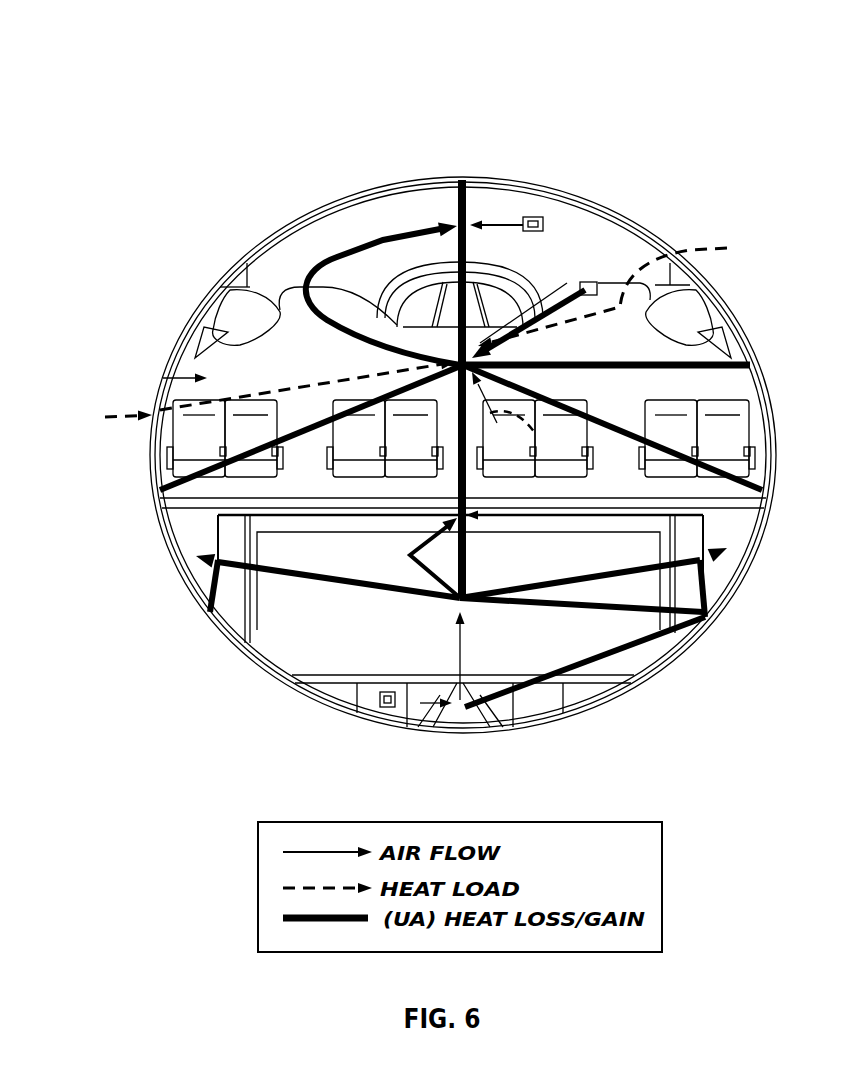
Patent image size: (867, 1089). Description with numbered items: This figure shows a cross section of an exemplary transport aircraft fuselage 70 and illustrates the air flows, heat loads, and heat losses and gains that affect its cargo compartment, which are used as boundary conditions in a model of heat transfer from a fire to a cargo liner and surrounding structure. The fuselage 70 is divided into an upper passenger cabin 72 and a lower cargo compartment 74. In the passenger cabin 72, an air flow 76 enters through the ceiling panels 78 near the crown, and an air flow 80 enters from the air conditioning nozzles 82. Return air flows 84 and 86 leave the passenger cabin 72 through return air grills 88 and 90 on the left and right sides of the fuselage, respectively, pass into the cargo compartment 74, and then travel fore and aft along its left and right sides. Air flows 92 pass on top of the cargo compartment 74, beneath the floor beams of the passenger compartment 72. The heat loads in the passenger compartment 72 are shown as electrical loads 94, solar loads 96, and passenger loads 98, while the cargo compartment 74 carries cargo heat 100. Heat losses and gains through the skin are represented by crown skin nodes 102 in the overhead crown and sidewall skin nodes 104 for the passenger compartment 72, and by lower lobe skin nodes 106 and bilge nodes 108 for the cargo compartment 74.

The fuselage 70 is at (710, 80).
The passenger cabin 72 is at (163, 372).
The cargo compartment 74 is at (318, 624).
The air flow 76 is at (308, 270).
The ceiling panels 78 is at (463, 310).
The air flow 80 is at (567, 282).
The air conditioning nozzles 82 is at (600, 282).
The return air flow 84 is at (305, 423).
The return air flow 86 is at (606, 421).
The return air grill 88 is at (165, 490).
The return air grill 90 is at (762, 508).
The air flows 92 is at (327, 517).
The electrical loads 94 is at (518, 217).
The solar loads 96 is at (105, 417).
The passenger loads 98 is at (537, 436).
The cargo heat 100 is at (380, 708).
The crown skin nodes 102 is at (455, 202).
The sidewall skin nodes 104 is at (690, 368).
The lower lobe skin nodes 106 is at (208, 580).
The bilge nodes 108 is at (610, 650).